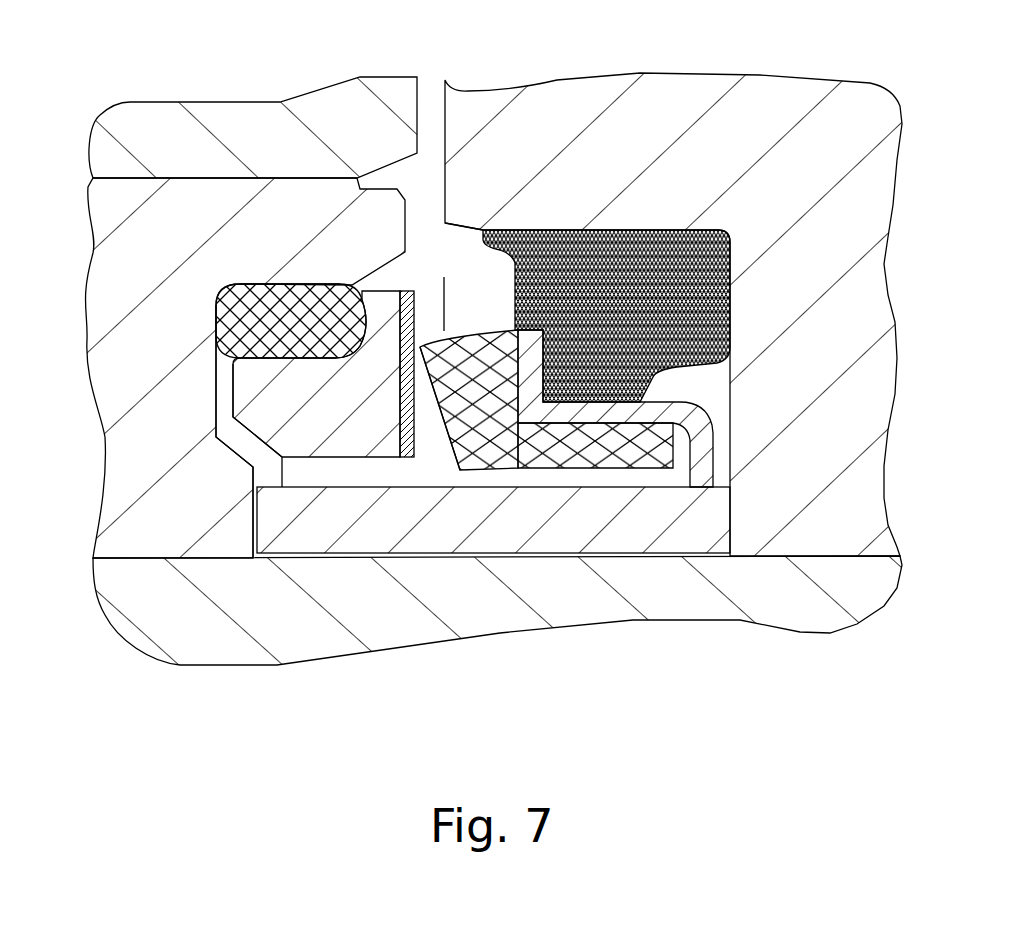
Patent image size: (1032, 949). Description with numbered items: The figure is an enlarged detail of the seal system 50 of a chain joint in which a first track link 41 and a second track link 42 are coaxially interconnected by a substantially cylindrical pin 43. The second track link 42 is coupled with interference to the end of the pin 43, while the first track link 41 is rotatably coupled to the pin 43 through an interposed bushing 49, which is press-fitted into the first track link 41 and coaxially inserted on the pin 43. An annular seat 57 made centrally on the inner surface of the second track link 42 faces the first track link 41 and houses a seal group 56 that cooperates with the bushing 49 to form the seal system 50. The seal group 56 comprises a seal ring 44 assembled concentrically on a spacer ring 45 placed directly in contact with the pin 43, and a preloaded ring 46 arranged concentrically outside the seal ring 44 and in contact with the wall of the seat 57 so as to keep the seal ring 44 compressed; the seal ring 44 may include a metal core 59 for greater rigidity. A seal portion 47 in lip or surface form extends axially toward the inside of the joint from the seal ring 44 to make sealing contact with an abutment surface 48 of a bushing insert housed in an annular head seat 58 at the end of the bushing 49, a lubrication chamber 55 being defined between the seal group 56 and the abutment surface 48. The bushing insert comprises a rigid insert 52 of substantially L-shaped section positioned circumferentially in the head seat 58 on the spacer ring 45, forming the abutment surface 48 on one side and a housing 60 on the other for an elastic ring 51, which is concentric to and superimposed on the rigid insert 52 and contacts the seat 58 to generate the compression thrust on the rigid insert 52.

The first track link 41 is at (181, 147).
The second track link 42 is at (861, 421).
The pin 43 is at (145, 603).
The seal ring 44 is at (501, 450).
The spacer ring 45 is at (585, 528).
The preloaded ring 46 is at (546, 229).
The seal portion 47 is at (472, 423).
The abutment surface 48 is at (404, 448).
The bushing 49 is at (127, 310).
The seal system 50 is at (273, 380).
The elastic ring 51 is at (264, 318).
The rigid insert 52 is at (388, 322).
The lubrication chamber 55 is at (434, 462).
The seal group 56 is at (471, 280).
The annular seat 57 is at (638, 228).
The annular head seat 58 is at (309, 291).
The metal core 59 is at (706, 428).
The housing 60 is at (309, 366).